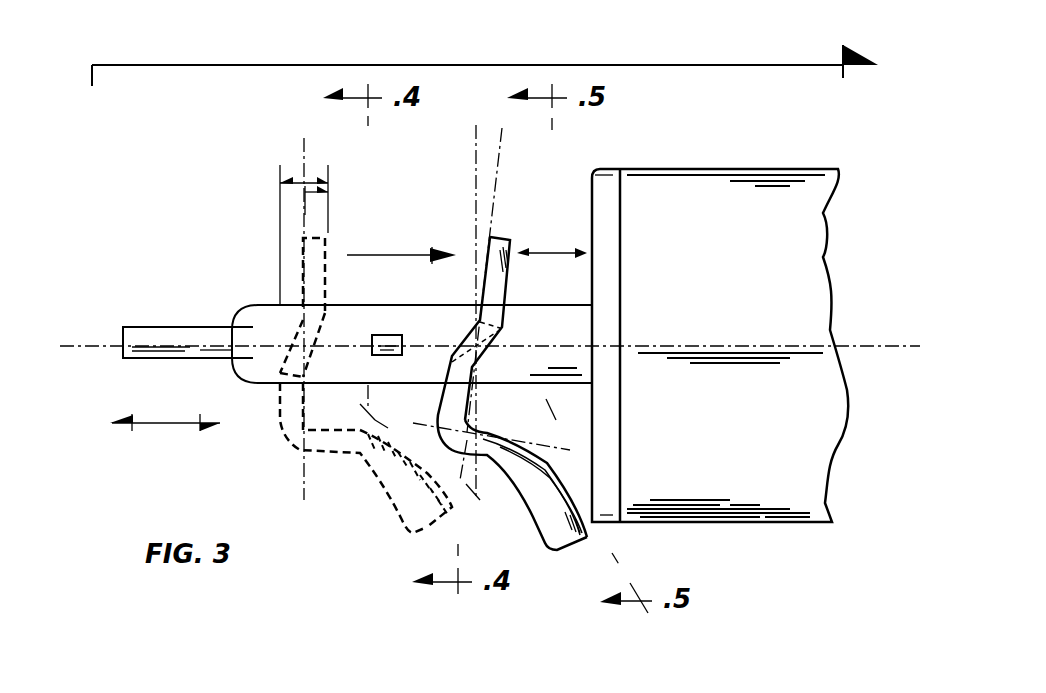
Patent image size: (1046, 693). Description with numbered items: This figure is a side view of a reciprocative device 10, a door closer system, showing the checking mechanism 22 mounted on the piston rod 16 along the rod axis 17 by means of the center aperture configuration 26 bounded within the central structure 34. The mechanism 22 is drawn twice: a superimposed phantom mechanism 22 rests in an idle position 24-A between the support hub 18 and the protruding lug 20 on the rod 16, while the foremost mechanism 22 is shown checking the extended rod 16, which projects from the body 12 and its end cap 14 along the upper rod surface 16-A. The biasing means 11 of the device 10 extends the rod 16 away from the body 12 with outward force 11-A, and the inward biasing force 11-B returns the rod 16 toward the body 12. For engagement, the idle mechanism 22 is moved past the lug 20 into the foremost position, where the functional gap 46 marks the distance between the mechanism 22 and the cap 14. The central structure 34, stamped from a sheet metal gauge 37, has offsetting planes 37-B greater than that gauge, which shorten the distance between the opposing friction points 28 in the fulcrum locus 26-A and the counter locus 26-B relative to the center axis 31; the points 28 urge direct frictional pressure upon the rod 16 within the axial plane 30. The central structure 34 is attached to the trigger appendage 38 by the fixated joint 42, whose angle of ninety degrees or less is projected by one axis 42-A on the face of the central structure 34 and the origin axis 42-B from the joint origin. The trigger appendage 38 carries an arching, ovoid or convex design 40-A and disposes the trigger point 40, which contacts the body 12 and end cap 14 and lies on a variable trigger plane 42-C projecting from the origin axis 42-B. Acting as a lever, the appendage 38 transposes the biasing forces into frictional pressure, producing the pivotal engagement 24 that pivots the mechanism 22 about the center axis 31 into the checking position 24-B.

The reciprocative device 10 is at (485, 55).
The biasing means 11 is at (165, 412).
The outward force 11-A is at (94, 449).
The inward biasing force 11-B is at (239, 449).
The body 12 is at (720, 328).
The end cap 14 is at (610, 283).
The piston rod 16 is at (246, 297).
The upper surface of actuating body 16-A is at (381, 286).
The axis of rod 17 is at (852, 346).
The support hub 18 is at (188, 317).
The protruding lug 20 is at (370, 333).
The checking mechanism 22 is at (350, 241).
The pivotal engagement 24 is at (522, 143).
The idle position 24-A is at (476, 195).
The checking position 24-B is at (497, 195).
The aperture configuration 26 is at (505, 353).
The fulcrum locus 26-A is at (380, 370).
The counter locus 26-B is at (559, 298).
The opposing friction points 28 is at (445, 358).
The axial plane 30 is at (429, 403).
The center axis 31 is at (480, 347).
The central structure 34 is at (488, 297).
The sheet metal gauge 37 is at (333, 193).
The offsetting planes 37-B is at (264, 235).
The trigger appendage 38 is at (540, 532).
The trigger point 40 is at (600, 511).
The arching, ovoid, or convex design 40-A is at (570, 473).
The fixated joint 42 is at (530, 412).
The joint axis on central structure face 42-A is at (494, 480).
The origin axis 42-B is at (543, 443).
The trigger plane 42-C is at (617, 537).
The functional gap 46 is at (600, 243).